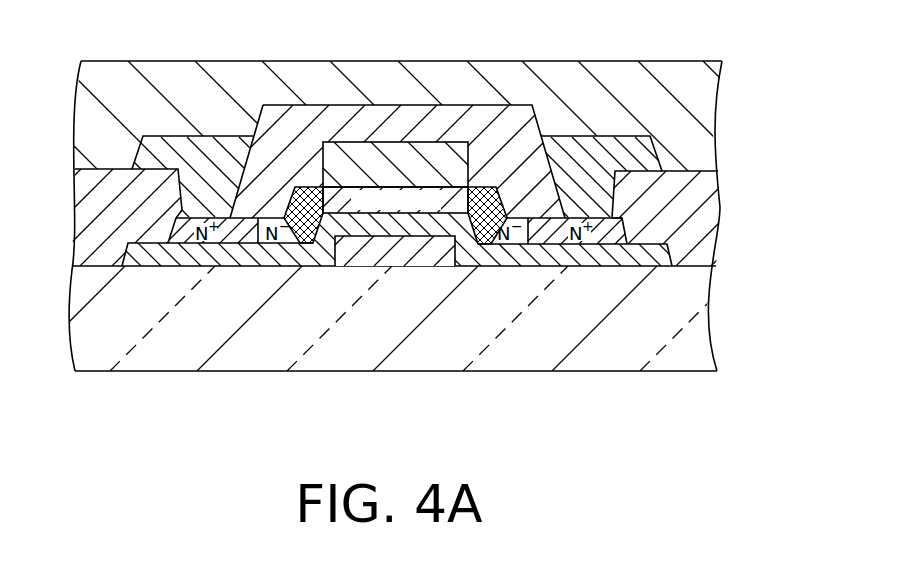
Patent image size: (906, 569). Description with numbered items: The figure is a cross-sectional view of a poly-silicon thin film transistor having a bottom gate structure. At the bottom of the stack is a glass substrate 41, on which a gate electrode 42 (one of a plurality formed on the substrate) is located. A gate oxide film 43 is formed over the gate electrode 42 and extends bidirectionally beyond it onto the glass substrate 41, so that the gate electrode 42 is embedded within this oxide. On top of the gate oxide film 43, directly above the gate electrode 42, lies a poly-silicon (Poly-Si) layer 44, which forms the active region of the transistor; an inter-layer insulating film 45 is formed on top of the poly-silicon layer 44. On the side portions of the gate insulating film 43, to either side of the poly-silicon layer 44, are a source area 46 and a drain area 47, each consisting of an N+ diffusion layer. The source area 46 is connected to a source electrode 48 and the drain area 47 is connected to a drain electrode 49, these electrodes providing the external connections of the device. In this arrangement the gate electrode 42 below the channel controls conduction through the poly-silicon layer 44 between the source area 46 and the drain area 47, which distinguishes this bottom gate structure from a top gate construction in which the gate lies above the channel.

The glass substrate 41 is at (560, 347).
The gate electrode 42 is at (345, 250).
The gate oxide film 43 is at (149, 250).
The poly-silicon layer 44 is at (349, 185).
The inter-layer insulating film 45 is at (455, 158).
The source area 46 is at (170, 230).
The drain area 47 is at (630, 230).
The source electrode 48 is at (210, 150).
The drain electrode 49 is at (592, 157).